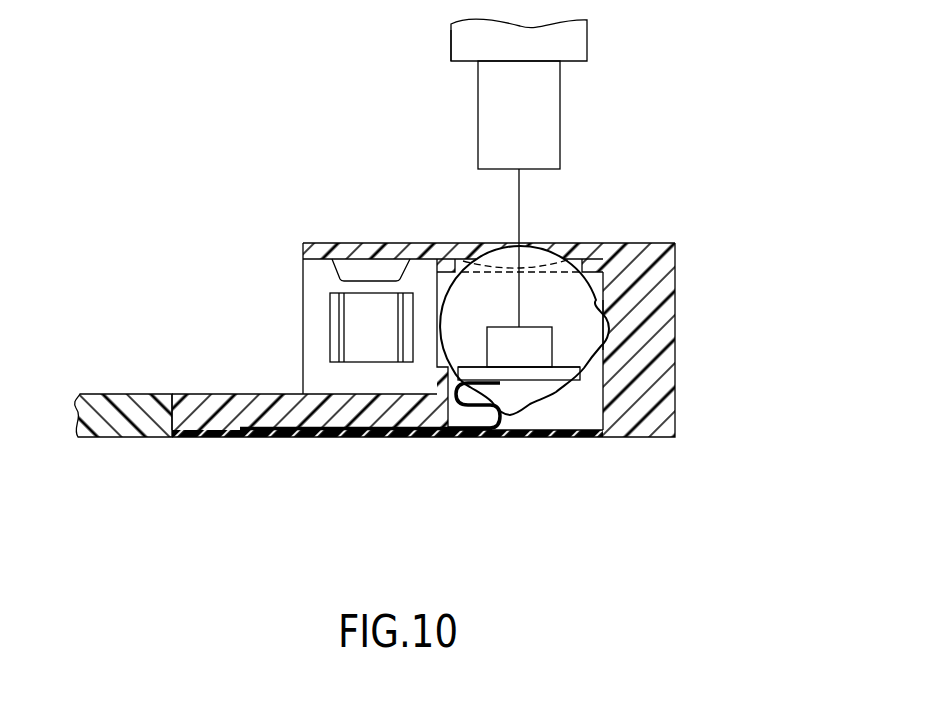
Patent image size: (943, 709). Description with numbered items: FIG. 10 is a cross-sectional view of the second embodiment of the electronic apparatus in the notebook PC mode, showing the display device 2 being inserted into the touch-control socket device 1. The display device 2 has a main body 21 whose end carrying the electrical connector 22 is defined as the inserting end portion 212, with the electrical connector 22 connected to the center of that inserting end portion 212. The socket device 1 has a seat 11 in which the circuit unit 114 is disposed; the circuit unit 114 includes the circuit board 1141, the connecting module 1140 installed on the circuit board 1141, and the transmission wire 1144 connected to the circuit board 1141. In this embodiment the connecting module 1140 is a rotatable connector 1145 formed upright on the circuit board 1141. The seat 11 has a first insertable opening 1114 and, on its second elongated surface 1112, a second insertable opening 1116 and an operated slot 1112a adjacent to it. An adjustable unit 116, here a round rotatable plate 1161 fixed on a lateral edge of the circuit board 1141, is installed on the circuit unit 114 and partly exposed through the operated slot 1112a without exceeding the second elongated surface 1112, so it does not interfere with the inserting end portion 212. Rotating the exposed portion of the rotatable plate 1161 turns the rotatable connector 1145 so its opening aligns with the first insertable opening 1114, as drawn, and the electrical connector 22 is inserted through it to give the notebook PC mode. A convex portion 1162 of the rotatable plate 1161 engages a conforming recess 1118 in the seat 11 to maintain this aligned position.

The touch-control socket device 1 is at (450, 362).
The seat 11 is at (417, 286).
The second elongated surface 1112 is at (338, 243).
The operated slot 1112a is at (470, 248).
The first insertable opening 1114 is at (437, 282).
The second insertable opening 1116 is at (582, 262).
The adjustable unit 116 is at (632, 310).
The rotatable plate 1161 is at (555, 292).
The convex portion 1162 is at (603, 325).
The recess 1118 is at (610, 342).
The circuit unit 114 is at (421, 457).
The transmission wire 1144 is at (464, 410).
The circuit board 1141 is at (522, 373).
The connecting module 1140 is at (530, 435).
The rotatable connector 1145 is at (530, 347).
The display device 2 is at (546, 173).
The main body 21 is at (575, 43).
The electrical connector 22 is at (545, 108).
The inserting end portion 212 is at (459, 44).